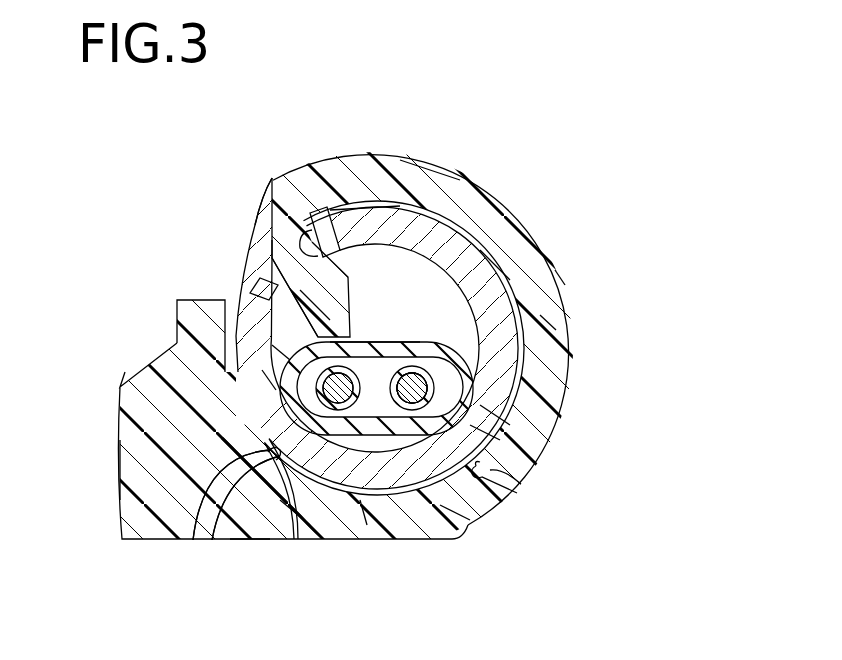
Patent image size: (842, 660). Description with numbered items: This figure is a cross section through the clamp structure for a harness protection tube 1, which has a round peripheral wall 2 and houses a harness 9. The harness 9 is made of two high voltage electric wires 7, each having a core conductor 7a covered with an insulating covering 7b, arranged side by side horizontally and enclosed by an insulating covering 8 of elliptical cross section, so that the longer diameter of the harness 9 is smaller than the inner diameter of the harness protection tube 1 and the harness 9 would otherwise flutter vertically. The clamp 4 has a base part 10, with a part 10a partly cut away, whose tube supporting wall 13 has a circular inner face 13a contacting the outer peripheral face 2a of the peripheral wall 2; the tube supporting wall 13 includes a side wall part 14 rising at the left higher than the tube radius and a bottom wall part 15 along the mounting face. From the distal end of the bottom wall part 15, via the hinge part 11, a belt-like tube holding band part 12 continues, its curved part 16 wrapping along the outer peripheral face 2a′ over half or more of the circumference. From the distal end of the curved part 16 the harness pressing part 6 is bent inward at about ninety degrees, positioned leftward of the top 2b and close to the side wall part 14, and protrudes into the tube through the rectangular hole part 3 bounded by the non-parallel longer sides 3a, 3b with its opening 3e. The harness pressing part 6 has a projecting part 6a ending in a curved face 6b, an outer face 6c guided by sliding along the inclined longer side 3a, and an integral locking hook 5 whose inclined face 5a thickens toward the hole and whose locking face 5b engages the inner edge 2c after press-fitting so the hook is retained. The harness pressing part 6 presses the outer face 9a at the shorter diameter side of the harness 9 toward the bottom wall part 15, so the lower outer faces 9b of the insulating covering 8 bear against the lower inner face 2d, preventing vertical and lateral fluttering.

The harness protection tube 1 is at (320, 313).
The peripheral wall 2 is at (483, 213).
The outer peripheral face 2a is at (297, 490).
The outer peripheral face 2a′ is at (495, 265).
The top 2b is at (430, 180).
The inner edge 2c is at (362, 235).
The inner face 2d is at (487, 420).
The hole part 3 is at (271, 262).
The longer side 3a is at (247, 282).
The longer side 3b is at (307, 215).
The opening 3e is at (247, 282).
The clamp 4 is at (245, 558).
The locking hook 5 is at (385, 230).
The inclined face 5a is at (353, 282).
The locking face 5b is at (330, 215).
The harness pressing part 6 is at (252, 278).
The projecting part 6a is at (267, 237).
The curved face 6b is at (283, 353).
The outer face 6c is at (267, 380).
The high voltage electric wires 7 is at (360, 408).
The core conductor 7a is at (414, 393).
The insulating covering 7b is at (457, 515).
The insulating covering 8 is at (405, 412).
The harness 9 is at (348, 448).
The outer face 9a is at (383, 340).
The outer faces 9b is at (490, 433).
The base part 10 is at (160, 545).
The part 10a is at (118, 468).
The hinge part 11 is at (513, 490).
The tube holding band part 12 is at (560, 277).
The tube supporting wall 13 is at (211, 530).
The inner face 13a is at (252, 505).
The side wall part 14 is at (193, 352).
The bottom wall part 15 is at (367, 525).
The curved part 16 is at (548, 322).